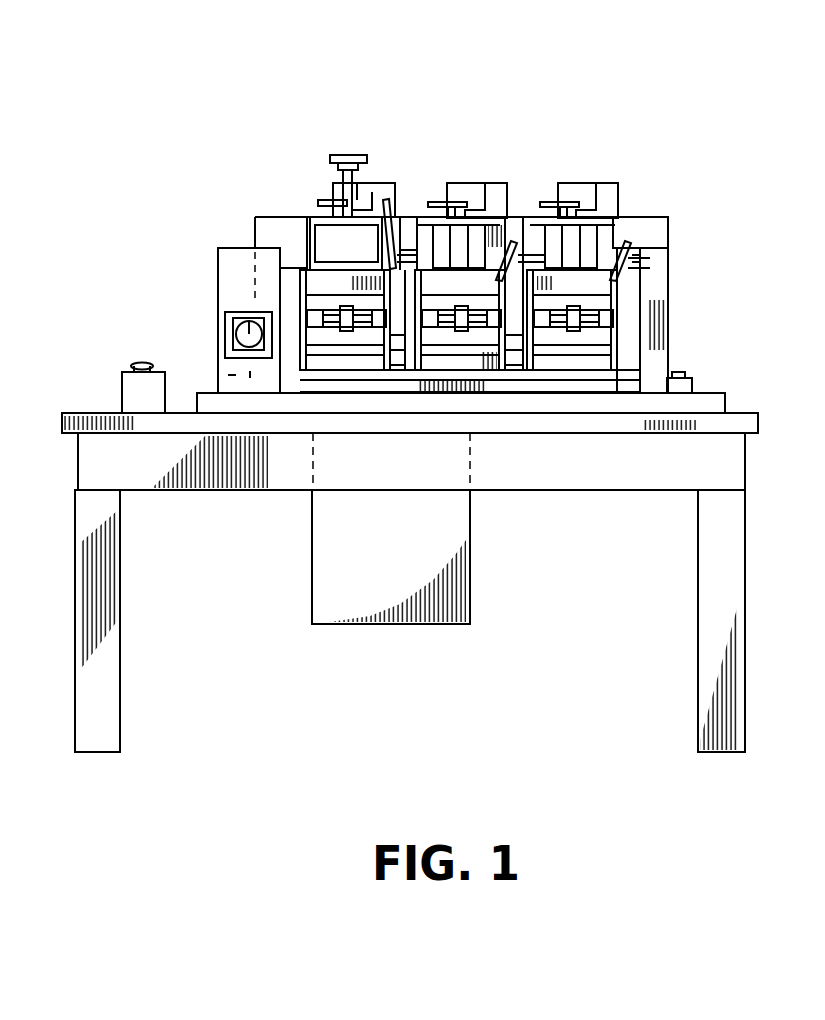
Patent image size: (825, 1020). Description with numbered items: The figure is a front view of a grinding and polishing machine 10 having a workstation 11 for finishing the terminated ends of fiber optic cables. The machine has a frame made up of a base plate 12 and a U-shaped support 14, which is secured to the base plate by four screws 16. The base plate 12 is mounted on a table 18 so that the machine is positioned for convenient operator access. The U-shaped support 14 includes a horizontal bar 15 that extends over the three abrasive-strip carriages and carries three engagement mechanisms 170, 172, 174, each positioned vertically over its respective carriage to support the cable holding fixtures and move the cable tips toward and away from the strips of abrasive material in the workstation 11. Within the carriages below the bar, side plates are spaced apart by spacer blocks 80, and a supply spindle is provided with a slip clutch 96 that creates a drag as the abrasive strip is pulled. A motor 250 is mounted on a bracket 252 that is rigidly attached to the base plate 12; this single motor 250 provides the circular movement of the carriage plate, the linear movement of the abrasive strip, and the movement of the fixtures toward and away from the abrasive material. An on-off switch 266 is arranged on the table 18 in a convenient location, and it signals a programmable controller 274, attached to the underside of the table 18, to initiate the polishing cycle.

The grinding and polishing machine 10 is at (690, 119).
The workstation 11 is at (334, 388).
The base plate 12 is at (710, 410).
The U-shaped support 14 is at (660, 288).
The horizontal bar 15 is at (650, 223).
The screws 16 is at (690, 377).
The table 18 is at (737, 475).
The spacer blocks 80 is at (378, 330).
The slip clutch 96 is at (345, 330).
The engagement mechanism 170 is at (565, 165).
The engagement mechanism 172 is at (446, 165).
The engagement mechanism 174 is at (311, 147).
The motor 250 is at (247, 338).
The bracket 252 is at (233, 255).
The on-off switch 266 is at (137, 392).
The programmable controller 274 is at (332, 555).